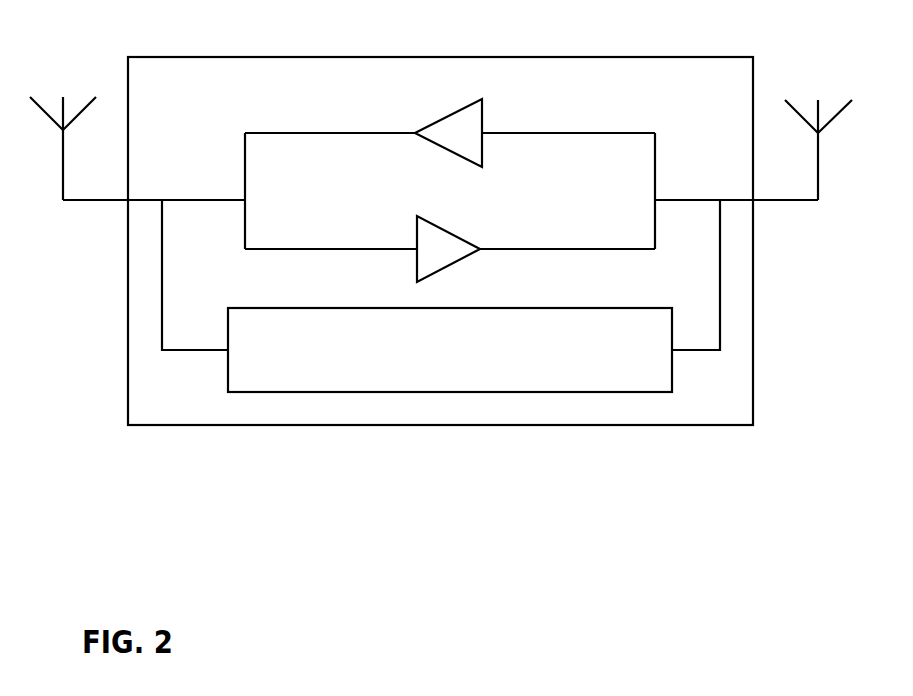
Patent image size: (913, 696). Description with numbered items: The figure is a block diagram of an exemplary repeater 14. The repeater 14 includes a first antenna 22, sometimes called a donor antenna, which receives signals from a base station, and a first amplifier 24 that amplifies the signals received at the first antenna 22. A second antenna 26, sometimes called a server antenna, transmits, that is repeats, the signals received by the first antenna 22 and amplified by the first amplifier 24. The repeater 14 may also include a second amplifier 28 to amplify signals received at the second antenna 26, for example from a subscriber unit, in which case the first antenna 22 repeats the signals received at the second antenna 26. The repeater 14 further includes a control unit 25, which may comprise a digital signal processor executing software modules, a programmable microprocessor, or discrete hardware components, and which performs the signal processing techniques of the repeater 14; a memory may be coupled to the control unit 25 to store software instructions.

The repeater 14 is at (163, 129).
The first antenna 22 is at (64, 104).
The first amplifier 24 is at (452, 113).
The control unit 25 is at (437, 374).
The second antenna 26 is at (820, 110).
The second amplifier 28 is at (463, 240).